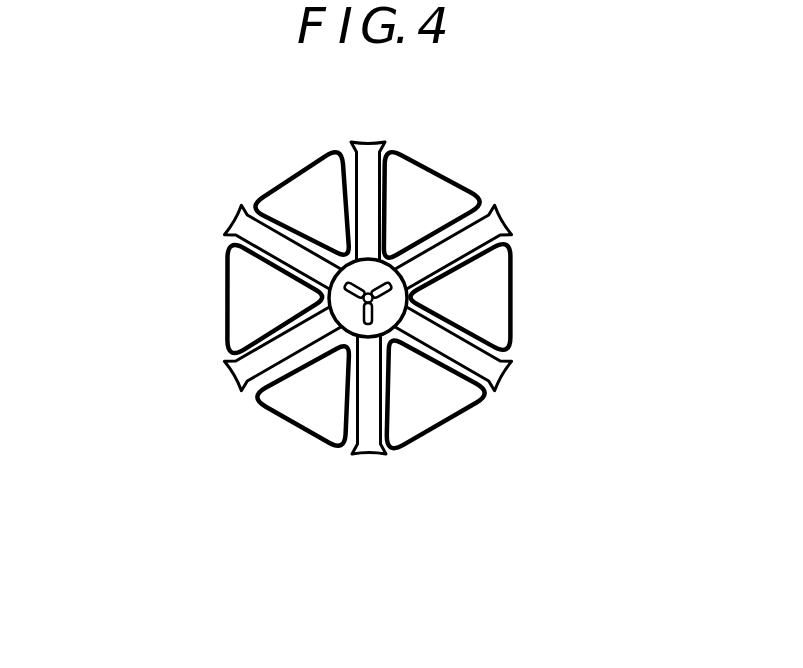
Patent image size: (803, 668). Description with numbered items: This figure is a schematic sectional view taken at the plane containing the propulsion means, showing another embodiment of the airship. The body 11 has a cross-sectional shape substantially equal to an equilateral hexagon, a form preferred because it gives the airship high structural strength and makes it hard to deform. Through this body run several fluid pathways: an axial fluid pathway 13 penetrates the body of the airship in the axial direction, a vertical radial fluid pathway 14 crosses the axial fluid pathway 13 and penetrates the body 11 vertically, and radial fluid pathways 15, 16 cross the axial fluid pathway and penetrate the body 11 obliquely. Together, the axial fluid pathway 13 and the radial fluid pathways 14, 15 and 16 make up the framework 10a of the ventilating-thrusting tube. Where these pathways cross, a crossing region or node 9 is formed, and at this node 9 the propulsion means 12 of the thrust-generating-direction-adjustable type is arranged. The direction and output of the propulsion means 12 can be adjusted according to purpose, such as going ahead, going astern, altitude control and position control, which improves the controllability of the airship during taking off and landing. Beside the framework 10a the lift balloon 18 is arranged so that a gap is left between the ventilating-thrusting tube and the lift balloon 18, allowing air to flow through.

The node 9 is at (325, 299).
The framework of the ventilating-thrusting tube 10a is at (492, 224).
The body 11 is at (471, 153).
The propulsion means 12 is at (386, 298).
The axial fluid pathway 13 is at (393, 345).
The vertical radial fluid pathway 14 is at (358, 166).
The radial fluid pathway 15 is at (273, 248).
The radial fluid pathway 16 is at (300, 347).
The lift balloon 18 is at (293, 195).